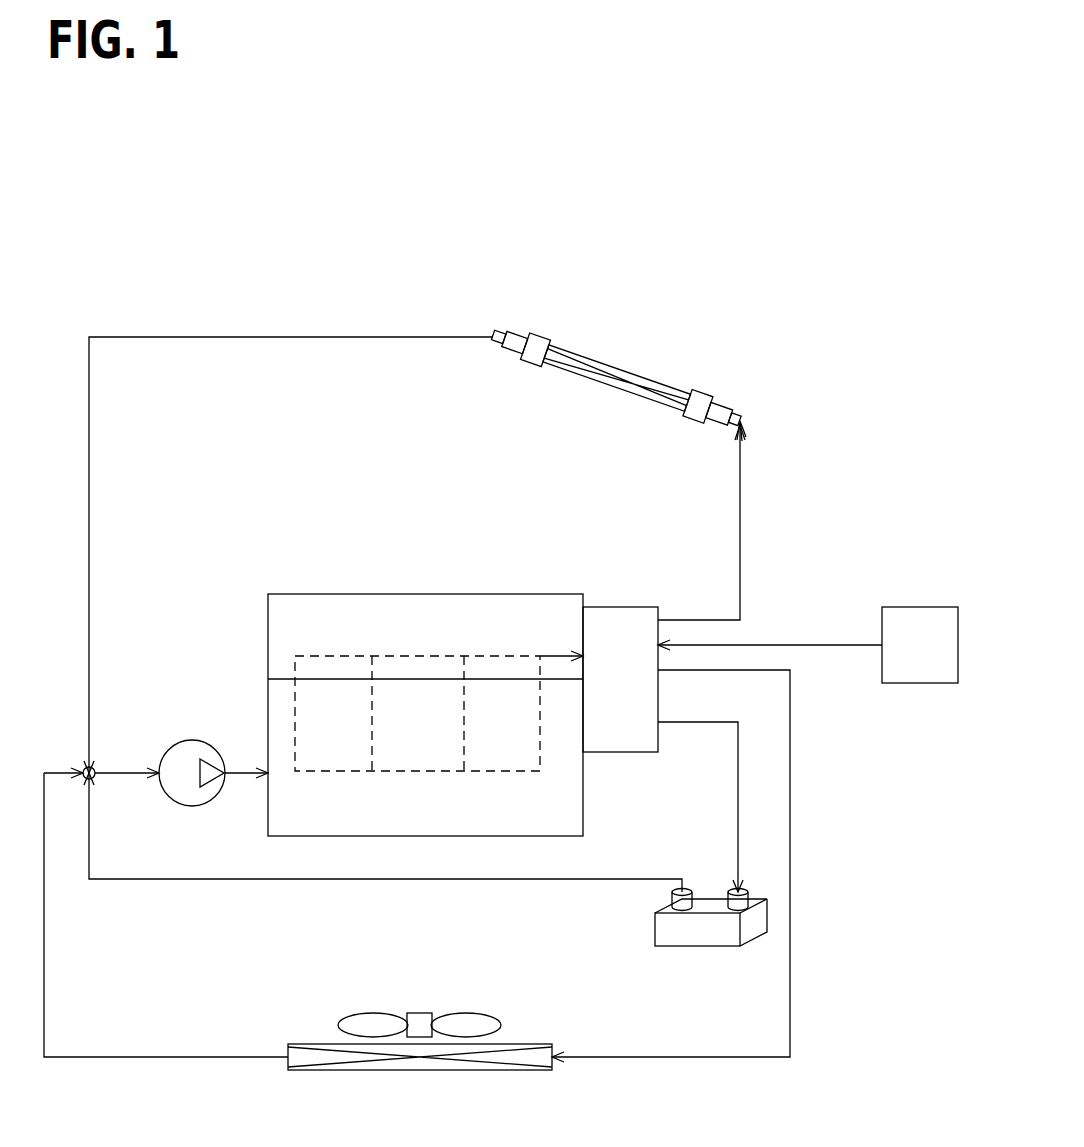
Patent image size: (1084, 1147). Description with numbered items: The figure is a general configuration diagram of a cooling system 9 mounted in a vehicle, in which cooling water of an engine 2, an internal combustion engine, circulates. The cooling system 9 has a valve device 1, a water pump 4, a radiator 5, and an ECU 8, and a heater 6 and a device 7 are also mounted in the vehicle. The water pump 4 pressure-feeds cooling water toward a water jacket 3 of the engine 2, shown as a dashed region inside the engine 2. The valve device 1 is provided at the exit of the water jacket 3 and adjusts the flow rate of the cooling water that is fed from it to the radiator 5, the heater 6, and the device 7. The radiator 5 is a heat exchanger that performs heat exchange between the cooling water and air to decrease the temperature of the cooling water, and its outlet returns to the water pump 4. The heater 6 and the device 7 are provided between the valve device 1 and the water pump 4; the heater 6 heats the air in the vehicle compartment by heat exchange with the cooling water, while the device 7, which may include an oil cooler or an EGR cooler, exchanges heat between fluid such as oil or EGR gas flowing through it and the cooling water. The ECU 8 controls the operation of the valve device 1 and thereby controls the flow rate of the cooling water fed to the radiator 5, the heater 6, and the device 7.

The valve device 1 is at (636, 607).
The engine 2 is at (296, 594).
The water jacket 3 is at (425, 656).
The water pump 4 is at (192, 740).
The radiator 5 is at (315, 1044).
The heater 6 is at (602, 363).
The device 7 is at (655, 928).
The ECU 8 is at (920, 607).
The cooling system 9 is at (853, 433).